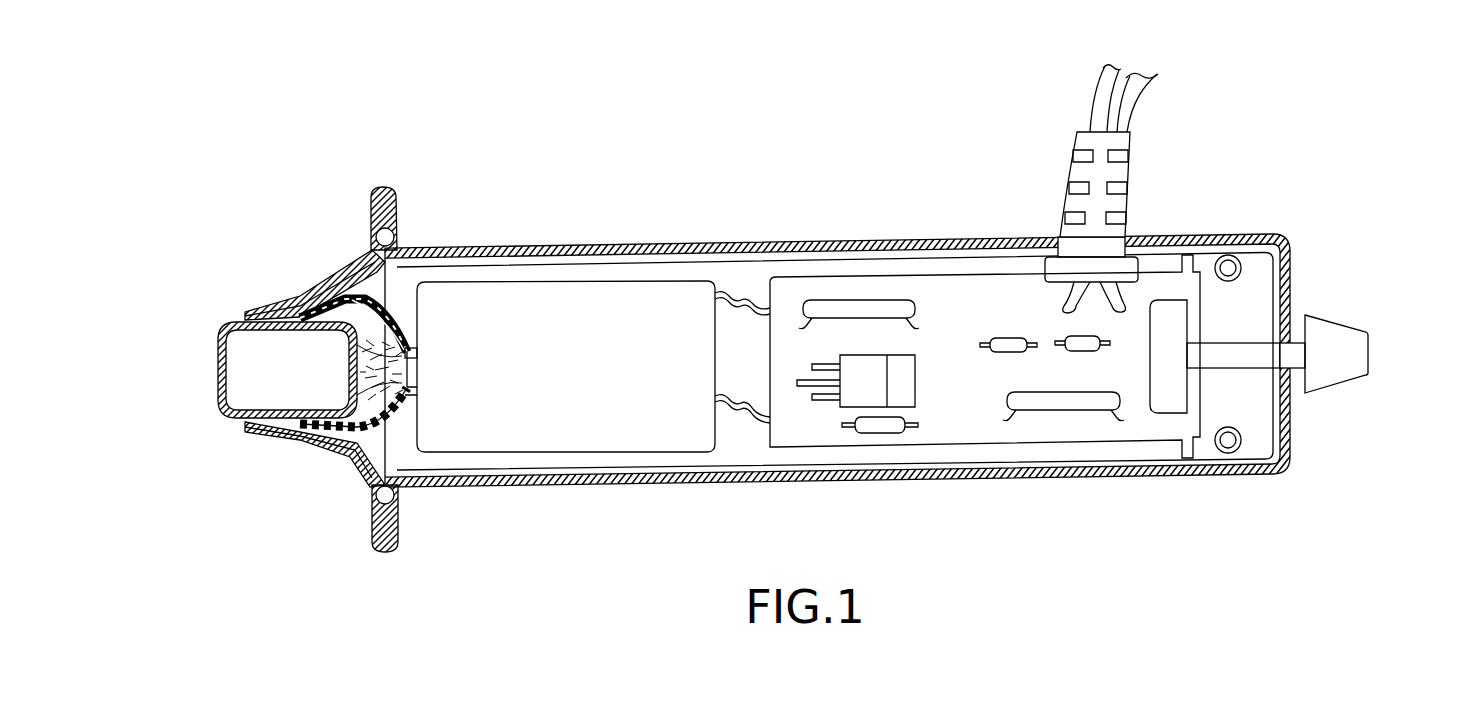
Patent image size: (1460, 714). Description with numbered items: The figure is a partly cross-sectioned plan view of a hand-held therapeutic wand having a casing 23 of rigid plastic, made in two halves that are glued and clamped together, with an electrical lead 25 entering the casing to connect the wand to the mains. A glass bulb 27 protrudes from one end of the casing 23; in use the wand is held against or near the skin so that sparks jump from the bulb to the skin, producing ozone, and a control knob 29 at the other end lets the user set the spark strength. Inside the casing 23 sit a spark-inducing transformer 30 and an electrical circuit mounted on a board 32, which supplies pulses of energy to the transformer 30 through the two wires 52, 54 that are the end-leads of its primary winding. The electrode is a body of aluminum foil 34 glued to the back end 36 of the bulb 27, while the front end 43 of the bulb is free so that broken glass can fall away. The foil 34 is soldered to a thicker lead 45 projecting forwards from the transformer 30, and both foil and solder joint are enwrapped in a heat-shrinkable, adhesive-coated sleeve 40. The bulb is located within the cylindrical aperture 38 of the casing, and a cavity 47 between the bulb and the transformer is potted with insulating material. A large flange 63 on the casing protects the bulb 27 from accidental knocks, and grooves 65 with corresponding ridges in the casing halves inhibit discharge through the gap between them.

The casing 23 is at (971, 480).
The electrical lead 25 is at (1122, 102).
The glass bulb 27 is at (207, 408).
The control knob 29 is at (1355, 342).
The spark-inducing transformer 30 is at (548, 270).
The board 32 is at (997, 290).
The metal foil electrode 34 is at (403, 399).
The back end of the bulb 36 is at (348, 371).
The cylindrical aperture 38 is at (262, 311).
The sleeve 40 is at (357, 302).
The front end of the bulb 43 is at (233, 371).
The lead 45 is at (412, 348).
The cavity 47 is at (404, 412).
The wire 52 is at (720, 338).
The wire 54 is at (716, 397).
The large flange 63 is at (398, 529).
The grooves 65 is at (351, 475).